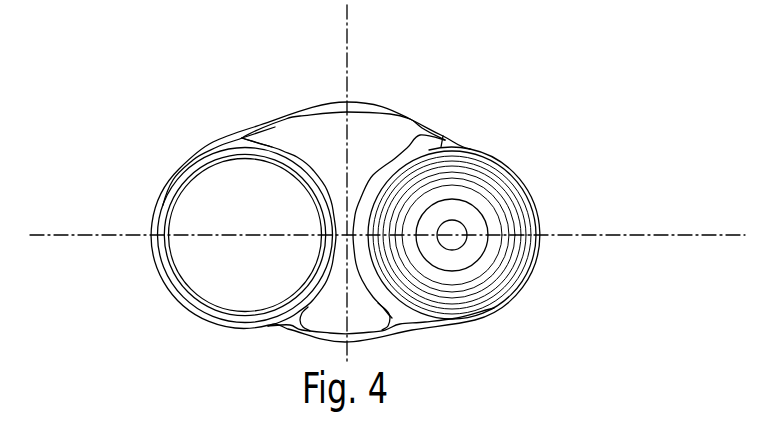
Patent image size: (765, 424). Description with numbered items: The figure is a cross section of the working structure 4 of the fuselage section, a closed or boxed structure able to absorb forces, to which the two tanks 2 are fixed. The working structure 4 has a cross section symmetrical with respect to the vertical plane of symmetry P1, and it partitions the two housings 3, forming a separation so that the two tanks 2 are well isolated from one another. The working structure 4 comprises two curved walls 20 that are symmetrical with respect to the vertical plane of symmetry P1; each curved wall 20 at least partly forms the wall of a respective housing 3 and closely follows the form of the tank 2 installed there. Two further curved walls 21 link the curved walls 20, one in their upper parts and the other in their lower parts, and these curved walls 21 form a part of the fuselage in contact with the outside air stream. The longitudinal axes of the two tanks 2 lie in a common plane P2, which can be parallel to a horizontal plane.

The tank 2 is at (482, 263).
The housing 3 is at (217, 227).
The working structure 4 is at (352, 108).
The curved wall 20 is at (322, 218).
The curved wall 21 is at (302, 112).
The vertical plane of symmetry P1 is at (355, 16).
The common plane P2 is at (83, 235).